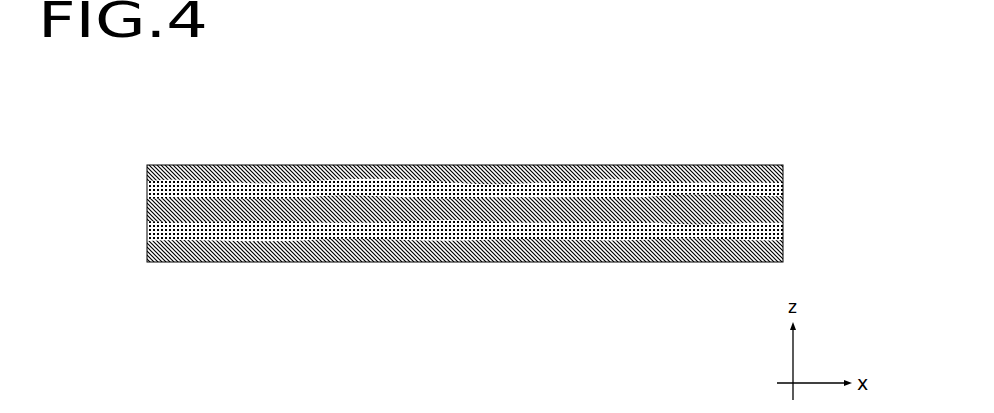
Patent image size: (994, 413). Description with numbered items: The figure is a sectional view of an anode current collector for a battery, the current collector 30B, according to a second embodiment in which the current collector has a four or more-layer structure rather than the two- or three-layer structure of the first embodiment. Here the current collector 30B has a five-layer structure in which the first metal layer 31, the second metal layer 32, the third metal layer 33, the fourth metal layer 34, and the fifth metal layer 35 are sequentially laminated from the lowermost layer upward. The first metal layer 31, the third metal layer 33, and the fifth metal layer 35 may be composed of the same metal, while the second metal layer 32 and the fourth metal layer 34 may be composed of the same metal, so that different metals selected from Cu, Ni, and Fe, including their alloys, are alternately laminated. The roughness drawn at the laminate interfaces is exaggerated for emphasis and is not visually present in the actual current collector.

The current collector 30B is at (893, 93).
The first metal layer 31 is at (143, 262).
The second metal layer 32 is at (783, 225).
The third metal layer 33 is at (148, 213).
The fourth metal layer 34 is at (783, 192).
The fifth metal layer 35 is at (145, 168).